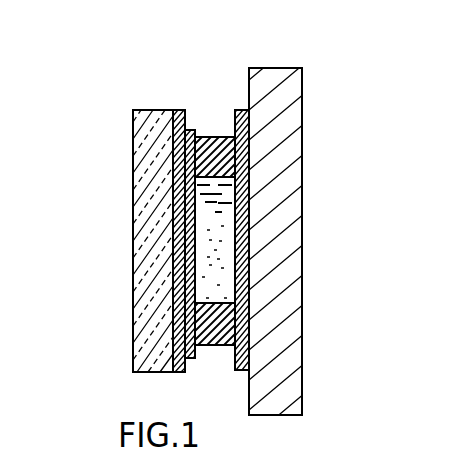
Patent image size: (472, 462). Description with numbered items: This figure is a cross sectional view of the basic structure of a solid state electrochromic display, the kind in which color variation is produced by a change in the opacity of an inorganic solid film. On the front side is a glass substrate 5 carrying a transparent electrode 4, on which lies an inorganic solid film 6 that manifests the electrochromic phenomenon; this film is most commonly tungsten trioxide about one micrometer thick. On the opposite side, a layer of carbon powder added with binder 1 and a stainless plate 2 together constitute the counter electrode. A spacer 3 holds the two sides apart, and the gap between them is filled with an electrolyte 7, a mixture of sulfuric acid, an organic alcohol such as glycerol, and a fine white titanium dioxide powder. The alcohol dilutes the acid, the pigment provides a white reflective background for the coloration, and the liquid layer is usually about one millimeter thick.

The layer of carbon powder added with binder 1 is at (249, 138).
The stainless plate 2 is at (300, 78).
The spacer 3 is at (225, 350).
The transparent electrode 4 is at (173, 371).
The glass substrate 5 is at (133, 149).
The inorganic solid film 6 is at (190, 130).
The electrolyte 7 is at (222, 216).